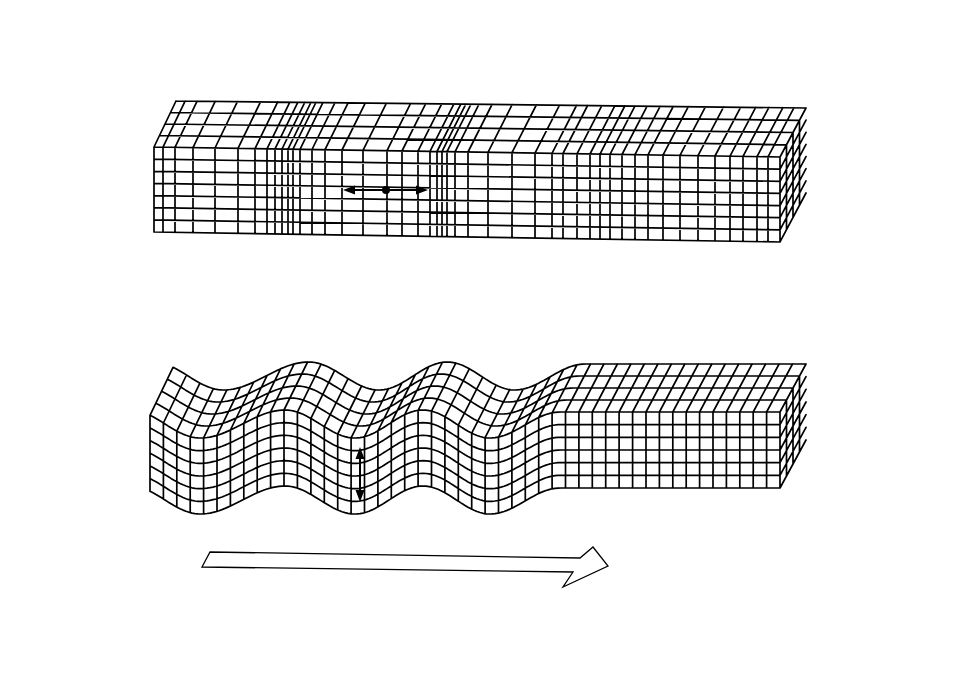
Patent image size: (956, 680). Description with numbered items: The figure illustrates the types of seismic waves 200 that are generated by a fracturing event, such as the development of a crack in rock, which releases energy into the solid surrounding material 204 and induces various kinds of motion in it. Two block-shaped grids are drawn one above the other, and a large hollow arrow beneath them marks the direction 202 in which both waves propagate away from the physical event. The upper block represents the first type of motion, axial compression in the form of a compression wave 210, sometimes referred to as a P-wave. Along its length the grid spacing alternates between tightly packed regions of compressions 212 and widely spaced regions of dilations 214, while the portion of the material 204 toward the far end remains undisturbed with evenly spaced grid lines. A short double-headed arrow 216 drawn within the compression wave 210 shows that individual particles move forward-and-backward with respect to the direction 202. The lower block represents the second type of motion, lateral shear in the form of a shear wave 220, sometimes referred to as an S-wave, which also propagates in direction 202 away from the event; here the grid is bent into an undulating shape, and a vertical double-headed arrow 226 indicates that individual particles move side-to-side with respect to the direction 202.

The seismic waves 200 is at (88, 243).
The direction 202 is at (426, 567).
The surrounding material 204 is at (697, 108).
The compression wave 210 is at (231, 84).
The regions of compressions 212 is at (463, 102).
The regions of dilations 214 is at (507, 238).
The arrow 216 is at (383, 192).
The shear wave 220 is at (231, 343).
The arrow 226 is at (357, 473).